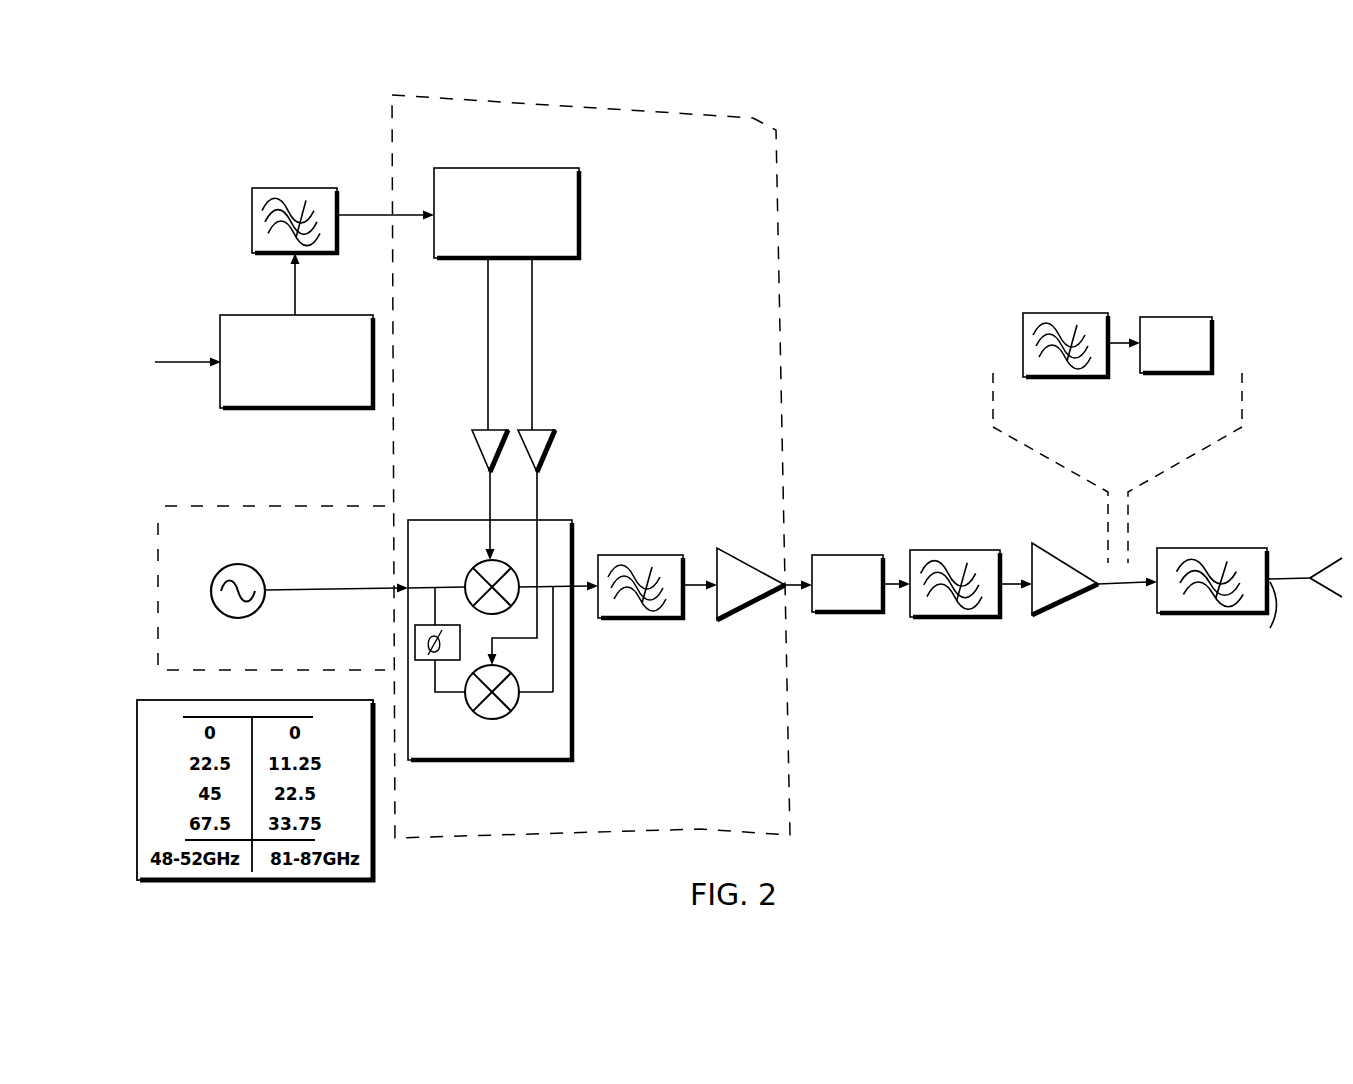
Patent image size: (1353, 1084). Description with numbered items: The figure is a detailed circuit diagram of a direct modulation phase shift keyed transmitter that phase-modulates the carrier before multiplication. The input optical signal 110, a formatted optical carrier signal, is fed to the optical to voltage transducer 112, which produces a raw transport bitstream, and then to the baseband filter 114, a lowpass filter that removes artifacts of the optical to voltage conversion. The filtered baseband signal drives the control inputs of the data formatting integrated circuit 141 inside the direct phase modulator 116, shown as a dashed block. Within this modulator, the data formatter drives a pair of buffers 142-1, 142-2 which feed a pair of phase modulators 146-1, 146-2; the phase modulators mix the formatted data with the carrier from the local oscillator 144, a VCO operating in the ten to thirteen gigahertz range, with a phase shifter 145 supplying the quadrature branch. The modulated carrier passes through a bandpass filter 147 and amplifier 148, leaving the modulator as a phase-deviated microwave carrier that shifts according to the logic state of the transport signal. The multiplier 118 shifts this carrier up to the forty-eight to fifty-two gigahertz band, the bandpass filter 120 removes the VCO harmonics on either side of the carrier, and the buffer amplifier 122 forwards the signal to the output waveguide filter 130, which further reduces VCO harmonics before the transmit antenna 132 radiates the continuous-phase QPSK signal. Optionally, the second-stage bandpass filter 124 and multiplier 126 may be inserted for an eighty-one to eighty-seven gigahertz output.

The input optical signal 110 is at (160, 358).
The optical to voltage transducer 112 is at (247, 410).
The baseband filter 114 is at (292, 188).
The direct phase modulator 116 is at (770, 203).
The data formatting integrated circuit 141 is at (528, 168).
The buffer 142-1 is at (468, 428).
The buffer 142-2 is at (548, 428).
The local oscillator 144 is at (236, 565).
The phase shifter 145 is at (454, 639).
The phase modulator 146-1 is at (506, 573).
The phase modulator 146-2 is at (516, 700).
The bandpass filter 147 is at (612, 620).
The amplifier 148 is at (724, 622).
The multiplier 118 is at (826, 614).
The bandpass filter 120 is at (924, 550).
The buffer amplifier 122 is at (1038, 618).
The second-stage bandpass filter 124 is at (1076, 378).
The multiplier 126 is at (1201, 318).
The output waveguide filter 130 is at (1243, 548).
The transmit antenna 132 is at (1332, 562).